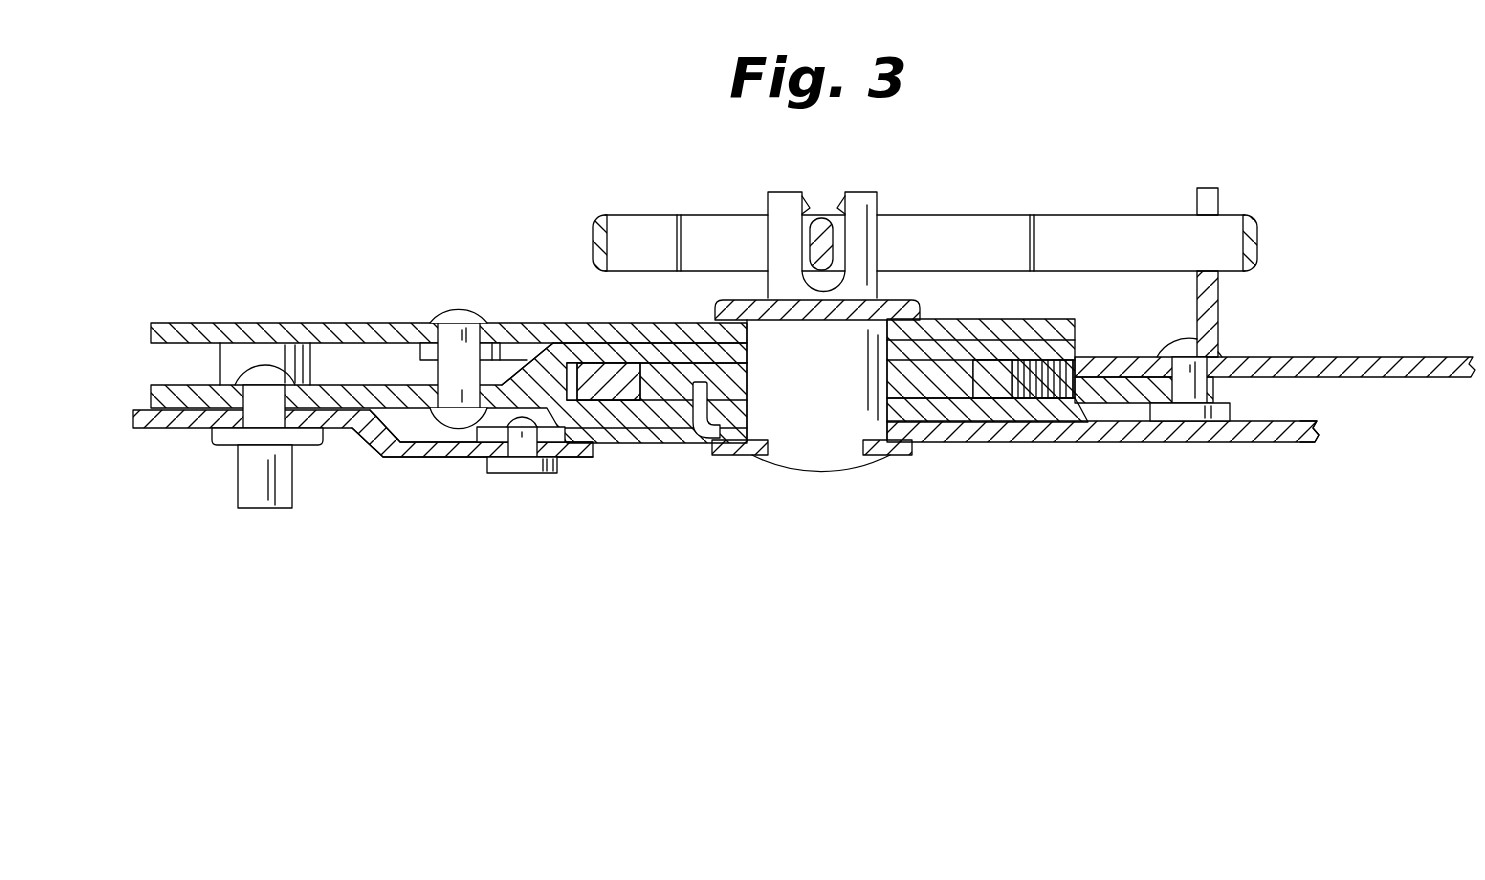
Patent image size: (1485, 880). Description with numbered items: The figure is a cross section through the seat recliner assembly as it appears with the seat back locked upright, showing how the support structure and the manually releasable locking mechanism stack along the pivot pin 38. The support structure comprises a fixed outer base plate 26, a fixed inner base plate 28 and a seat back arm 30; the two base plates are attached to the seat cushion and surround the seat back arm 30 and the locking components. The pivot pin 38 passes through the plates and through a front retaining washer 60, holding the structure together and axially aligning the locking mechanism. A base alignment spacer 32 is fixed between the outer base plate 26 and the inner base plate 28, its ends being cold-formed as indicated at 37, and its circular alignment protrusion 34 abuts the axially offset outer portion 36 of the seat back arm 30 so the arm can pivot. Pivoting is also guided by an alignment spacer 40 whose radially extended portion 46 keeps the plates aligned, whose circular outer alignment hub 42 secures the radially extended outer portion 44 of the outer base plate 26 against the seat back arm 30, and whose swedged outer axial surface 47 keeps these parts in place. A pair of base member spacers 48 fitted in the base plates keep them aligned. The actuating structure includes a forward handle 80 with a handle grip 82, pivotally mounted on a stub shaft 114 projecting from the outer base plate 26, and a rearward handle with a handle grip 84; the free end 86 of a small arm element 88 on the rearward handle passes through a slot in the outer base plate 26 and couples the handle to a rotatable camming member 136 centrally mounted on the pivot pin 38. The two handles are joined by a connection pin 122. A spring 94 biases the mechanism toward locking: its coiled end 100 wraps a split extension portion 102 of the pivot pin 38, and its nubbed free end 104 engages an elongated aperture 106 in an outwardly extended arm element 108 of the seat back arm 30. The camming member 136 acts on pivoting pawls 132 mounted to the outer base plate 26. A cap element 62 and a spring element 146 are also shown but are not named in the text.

The fixed outer base plate 26 is at (605, 430).
The fixed inner base plate 28 is at (370, 333).
The seat back arm 30 is at (1372, 358).
The base alignment spacer 32 is at (440, 365).
The circular alignment protrusion 34 is at (485, 350).
The axially offset outer portion 36 is at (527, 368).
The cold-formed ends 37 is at (458, 308).
The pivot pin 38 is at (820, 462).
The alignment spacer 40 is at (1207, 392).
The circular outer alignment hub 42 is at (1200, 410).
The radially extended outer portion 44 is at (1132, 400).
The radially extended portion 46 is at (1068, 430).
The swedged outer axial surface 47 is at (1205, 345).
The base member spacer 48 is at (232, 355).
The front retaining washer 60 is at (877, 455).
The cap 62 is at (915, 306).
The forward handle 80 is at (380, 450).
The handle grip 82 is at (173, 415).
The handle grip 84 is at (1318, 430).
The free end 86 is at (700, 365).
The arm element 88 is at (690, 437).
The spring 94 is at (936, 225).
The coiled end 100 is at (820, 215).
The split extension portion 102 is at (778, 203).
The nubbed free end 104 is at (1257, 235).
The elongated aperture 106 is at (1197, 210).
The outwardly extended arm element 108 is at (1215, 300).
The stub shaft 114 is at (255, 498).
The connection pin 122 is at (513, 465).
The pivoting pawl 132 is at (625, 370).
The rotatable camming member 136 is at (960, 375).
The spring 146 is at (572, 383).